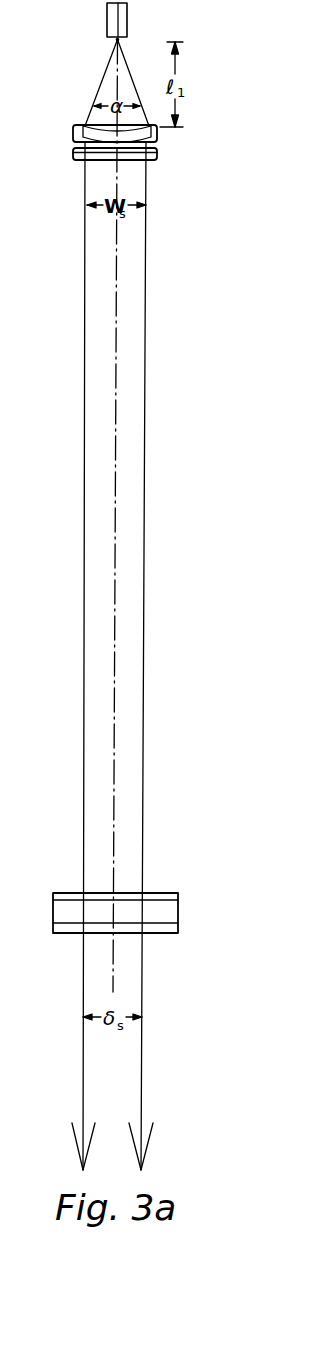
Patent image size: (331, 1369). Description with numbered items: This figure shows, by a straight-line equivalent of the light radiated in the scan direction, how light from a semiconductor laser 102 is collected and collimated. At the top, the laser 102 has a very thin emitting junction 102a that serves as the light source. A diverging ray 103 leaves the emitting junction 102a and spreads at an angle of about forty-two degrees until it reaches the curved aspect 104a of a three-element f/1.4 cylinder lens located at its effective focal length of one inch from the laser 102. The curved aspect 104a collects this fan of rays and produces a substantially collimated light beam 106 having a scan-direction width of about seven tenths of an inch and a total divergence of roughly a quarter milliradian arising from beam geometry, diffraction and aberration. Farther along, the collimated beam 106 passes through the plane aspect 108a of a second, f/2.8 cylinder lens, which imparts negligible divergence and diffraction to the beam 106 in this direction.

The semiconductor laser 102 is at (107, 26).
The emitting junction 102a is at (120, 40).
The ray 103 is at (109, 62).
The curved aspect of lens 104a is at (78, 126).
The collimated light beam 106 is at (118, 261).
The plane aspect of lens 108a is at (62, 893).